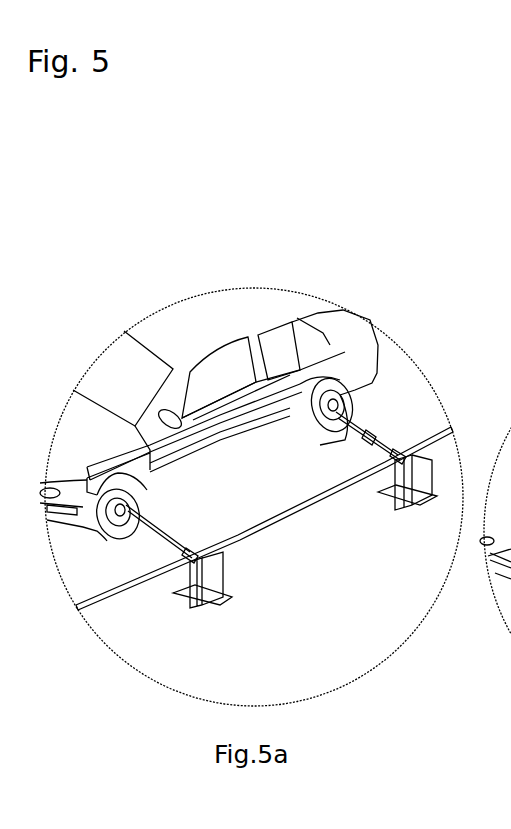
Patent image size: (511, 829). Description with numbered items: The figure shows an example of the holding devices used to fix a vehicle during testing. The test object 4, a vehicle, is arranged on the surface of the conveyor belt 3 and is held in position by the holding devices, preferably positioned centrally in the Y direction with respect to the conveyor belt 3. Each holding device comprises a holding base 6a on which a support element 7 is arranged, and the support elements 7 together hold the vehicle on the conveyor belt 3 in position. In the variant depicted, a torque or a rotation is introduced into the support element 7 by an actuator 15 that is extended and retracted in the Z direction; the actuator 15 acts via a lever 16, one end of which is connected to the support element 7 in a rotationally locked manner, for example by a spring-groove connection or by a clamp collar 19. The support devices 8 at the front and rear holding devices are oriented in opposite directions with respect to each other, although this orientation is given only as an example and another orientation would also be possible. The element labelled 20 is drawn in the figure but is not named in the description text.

The conveyor belt 3 is at (240, 500).
The test object 4 is at (183, 337).
The holding base 6a is at (212, 598).
The support element 7 is at (183, 550).
The support device 8 is at (137, 507).
The actuator 15 is at (386, 492).
The lever 16 is at (240, 560).
The clamp collar 19 is at (193, 560).
The support element 20 is at (418, 493).